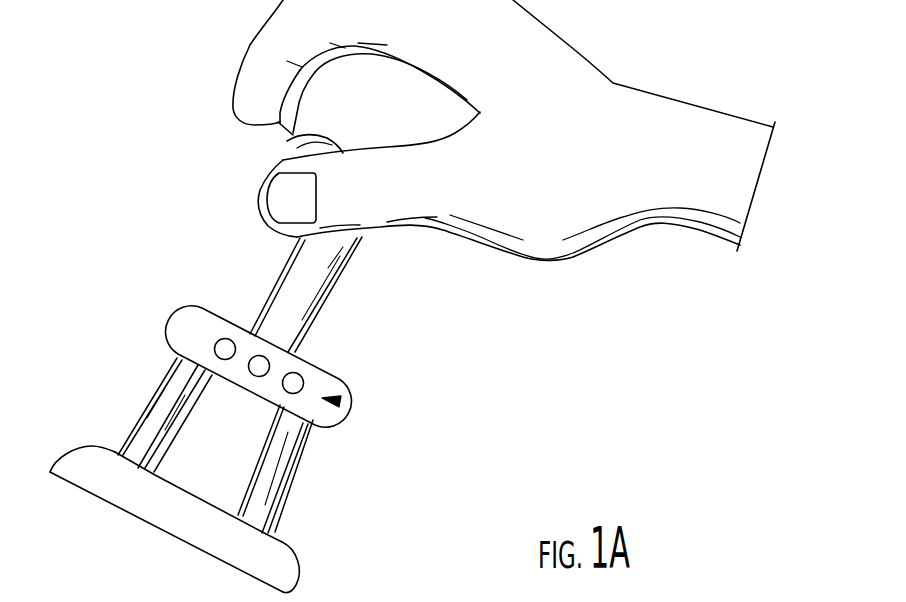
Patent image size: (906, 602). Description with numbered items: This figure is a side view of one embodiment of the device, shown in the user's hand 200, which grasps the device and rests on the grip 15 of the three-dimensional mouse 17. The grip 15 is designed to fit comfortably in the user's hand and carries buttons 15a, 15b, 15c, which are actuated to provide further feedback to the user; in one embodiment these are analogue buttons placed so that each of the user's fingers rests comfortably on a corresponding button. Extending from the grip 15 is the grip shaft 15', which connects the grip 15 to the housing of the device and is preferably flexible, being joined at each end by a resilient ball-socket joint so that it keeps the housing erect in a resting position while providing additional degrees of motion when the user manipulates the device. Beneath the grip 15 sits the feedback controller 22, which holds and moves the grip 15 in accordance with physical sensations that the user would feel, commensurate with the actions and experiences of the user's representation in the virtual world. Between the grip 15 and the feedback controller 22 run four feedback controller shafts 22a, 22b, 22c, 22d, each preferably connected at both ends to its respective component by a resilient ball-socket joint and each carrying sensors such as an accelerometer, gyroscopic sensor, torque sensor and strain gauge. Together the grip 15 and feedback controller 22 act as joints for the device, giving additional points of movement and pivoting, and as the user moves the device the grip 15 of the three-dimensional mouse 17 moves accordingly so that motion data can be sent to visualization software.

The user's hand 200 is at (523, 88).
The grip 15 is at (258, 331).
The grip shaft 15' is at (339, 294).
The button 15a is at (305, 382).
The button 15b is at (260, 360).
The button 15c is at (226, 345).
The 3-D mouse 17 is at (337, 403).
The feedback controller 22 is at (107, 480).
The feedback controller shaft 22a is at (157, 405).
The feedback controller shaft 22b is at (196, 388).
The feedback controller shaft 22c is at (278, 500).
The feedback controller shaft 22d is at (303, 453).